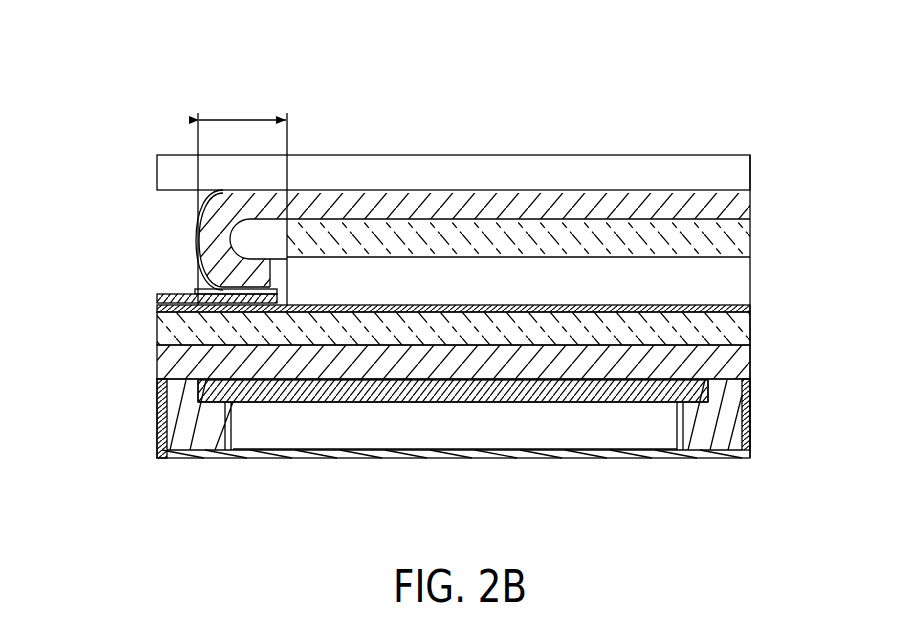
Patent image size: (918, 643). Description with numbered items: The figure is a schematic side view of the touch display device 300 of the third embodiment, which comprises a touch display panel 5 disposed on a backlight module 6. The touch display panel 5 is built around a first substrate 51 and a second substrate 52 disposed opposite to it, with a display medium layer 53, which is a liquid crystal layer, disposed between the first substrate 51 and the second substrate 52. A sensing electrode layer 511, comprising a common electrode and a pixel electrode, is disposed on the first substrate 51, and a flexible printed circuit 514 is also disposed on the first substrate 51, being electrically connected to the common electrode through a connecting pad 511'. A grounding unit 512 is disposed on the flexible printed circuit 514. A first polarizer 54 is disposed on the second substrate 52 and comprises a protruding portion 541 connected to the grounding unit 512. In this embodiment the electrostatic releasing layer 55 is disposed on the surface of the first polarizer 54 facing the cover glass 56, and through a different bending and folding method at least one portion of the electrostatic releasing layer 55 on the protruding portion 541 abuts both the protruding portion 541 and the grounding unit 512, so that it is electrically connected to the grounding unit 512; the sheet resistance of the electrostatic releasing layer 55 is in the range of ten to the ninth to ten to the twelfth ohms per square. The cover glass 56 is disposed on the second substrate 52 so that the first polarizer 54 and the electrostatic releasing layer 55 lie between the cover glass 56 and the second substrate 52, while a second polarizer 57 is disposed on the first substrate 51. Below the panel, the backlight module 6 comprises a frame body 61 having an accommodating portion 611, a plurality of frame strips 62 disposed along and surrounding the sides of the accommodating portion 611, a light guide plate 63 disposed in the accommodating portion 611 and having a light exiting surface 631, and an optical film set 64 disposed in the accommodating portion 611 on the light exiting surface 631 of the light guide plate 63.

The touch display device 300 is at (80, 42).
The touch display panel 5 is at (72, 145).
The cover glass 56 is at (167, 172).
The electrostatic releasing layer 55 is at (203, 206).
The first polarizer 54 is at (752, 201).
The protruding portion 541 is at (242, 196).
The second substrate 52 is at (297, 237).
The display medium layer 53 is at (297, 273).
The grounding unit 512 is at (200, 290).
The flexible printed circuit 514 is at (167, 298).
The connecting pad 511' is at (419, 310).
The sensing electrode layer 511 is at (419, 330).
The first substrate 51 is at (158, 342).
The second polarizer 57 is at (160, 375).
The backlight module 6 is at (795, 514).
The frame body 61 is at (664, 453).
The accommodating portion 611 is at (750, 430).
The frame strips 62 is at (714, 440).
The light guide plate 63 is at (584, 432).
The light exiting surface 631 is at (443, 402).
The optical film set 64 is at (518, 380).